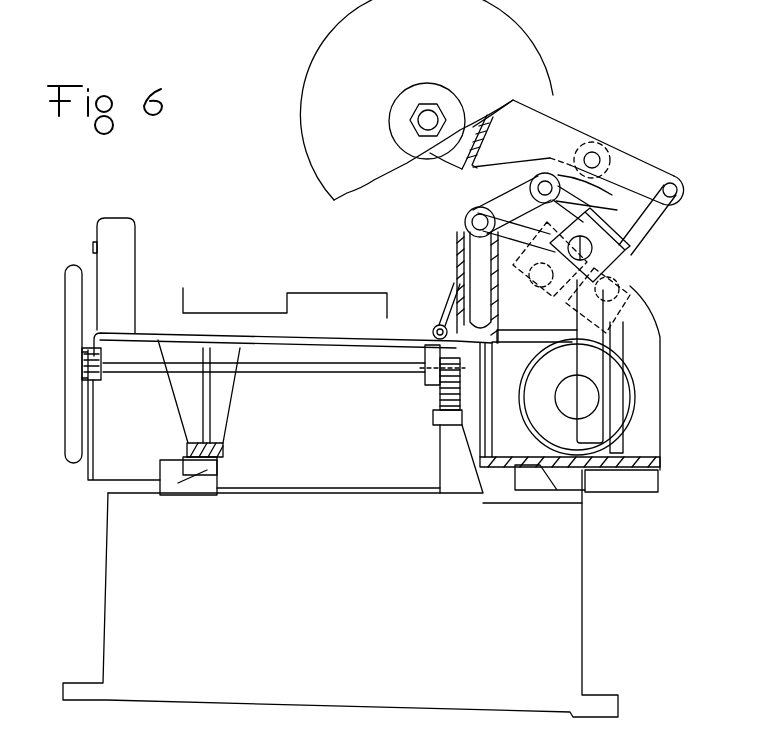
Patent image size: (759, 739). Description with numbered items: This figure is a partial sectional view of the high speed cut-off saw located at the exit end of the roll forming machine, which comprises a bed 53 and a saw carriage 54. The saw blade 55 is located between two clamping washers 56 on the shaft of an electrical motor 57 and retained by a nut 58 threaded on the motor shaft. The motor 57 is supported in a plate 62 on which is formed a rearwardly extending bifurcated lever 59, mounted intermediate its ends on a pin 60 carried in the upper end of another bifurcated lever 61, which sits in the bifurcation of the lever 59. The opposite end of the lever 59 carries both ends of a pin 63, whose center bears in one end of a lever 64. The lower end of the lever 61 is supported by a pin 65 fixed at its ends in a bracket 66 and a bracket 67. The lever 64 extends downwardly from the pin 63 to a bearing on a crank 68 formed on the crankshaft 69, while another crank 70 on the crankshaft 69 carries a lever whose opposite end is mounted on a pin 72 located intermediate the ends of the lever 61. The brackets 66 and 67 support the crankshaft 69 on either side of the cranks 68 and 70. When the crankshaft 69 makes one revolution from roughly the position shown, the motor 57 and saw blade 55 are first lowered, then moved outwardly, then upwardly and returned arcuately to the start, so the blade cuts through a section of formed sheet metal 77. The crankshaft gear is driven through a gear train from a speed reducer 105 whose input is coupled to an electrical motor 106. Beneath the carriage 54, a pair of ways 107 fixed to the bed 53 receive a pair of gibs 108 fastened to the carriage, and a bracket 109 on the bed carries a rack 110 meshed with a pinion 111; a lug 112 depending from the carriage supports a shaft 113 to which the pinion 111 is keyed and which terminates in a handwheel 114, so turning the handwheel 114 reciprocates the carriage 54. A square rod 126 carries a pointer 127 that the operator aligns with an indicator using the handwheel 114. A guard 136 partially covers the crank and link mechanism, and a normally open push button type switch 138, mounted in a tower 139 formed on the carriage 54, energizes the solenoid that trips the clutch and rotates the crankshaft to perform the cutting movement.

The bed 53 is at (105, 612).
The saw carriage 54 is at (355, 338).
The saw blade 55 is at (320, 66).
The clamping washers 56 is at (425, 88).
The electrical motor 57 is at (435, 163).
The nut 58 is at (413, 128).
The bifurcated lever 59 is at (545, 118).
The pin 60 is at (594, 150).
The bifurcated lever 61 is at (492, 198).
The plate 62 is at (464, 170).
The pin 63 is at (672, 178).
The lever 64 is at (651, 213).
The pin 65 is at (465, 223).
The bracket 66 is at (470, 265).
The bracket 67 is at (656, 330).
The crank 68 is at (533, 282).
The crankshaft 69 is at (592, 250).
The crank 70 is at (620, 290).
The pin 72 is at (530, 182).
The formed sheet metal 77 is at (335, 297).
The speed reducer 105 is at (500, 333).
The electrical motor 106 is at (620, 390).
The ways 107 is at (194, 490).
The gibs 108 is at (210, 467).
The bracket 109 is at (440, 472).
The rack 110 is at (433, 415).
The pinion 111 is at (440, 390).
The lug 112 is at (425, 360).
The shaft 113 is at (322, 371).
The handwheel 114 is at (64, 432).
The square rod 126 is at (433, 332).
The pointer 127 is at (449, 305).
The guard 136 is at (456, 247).
The push button type switch 138 is at (93, 246).
The tower 139 is at (125, 258).